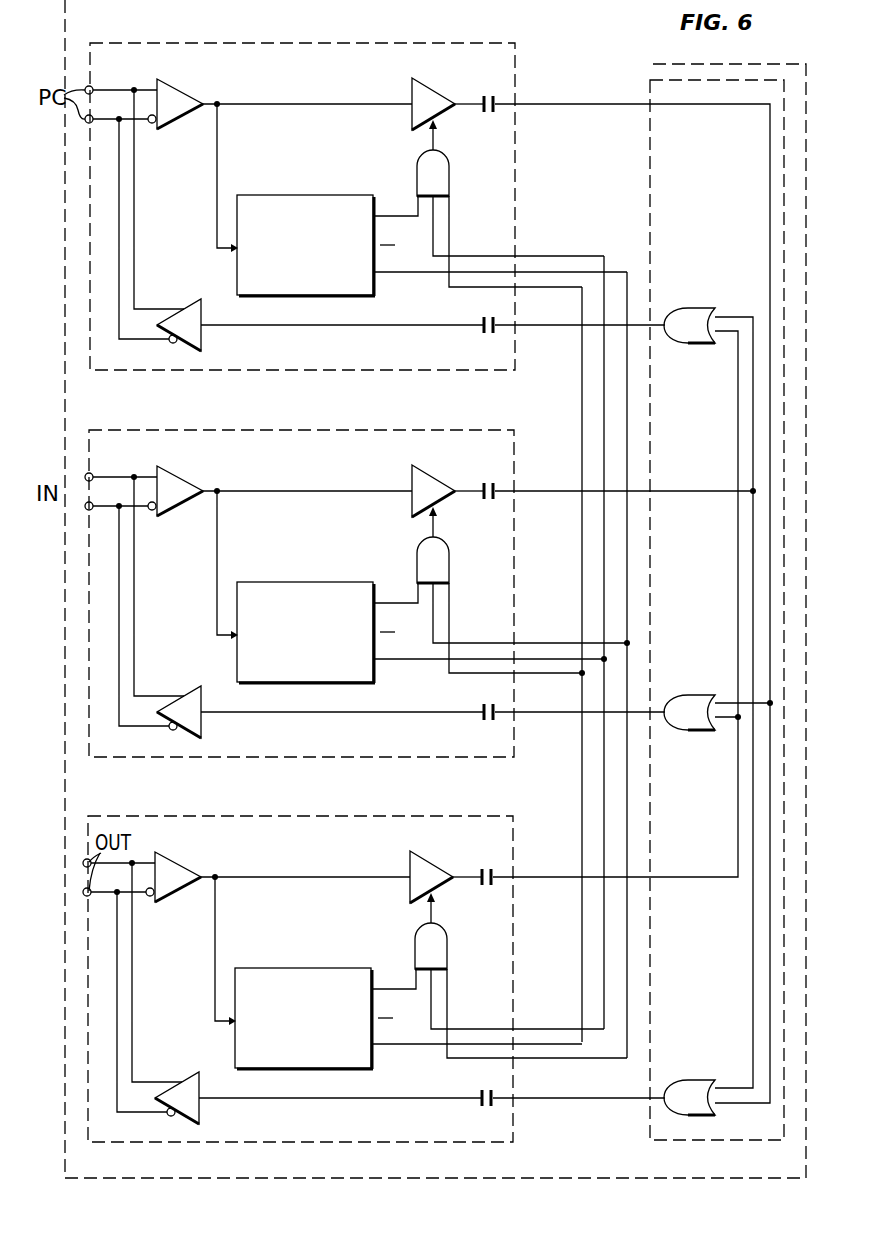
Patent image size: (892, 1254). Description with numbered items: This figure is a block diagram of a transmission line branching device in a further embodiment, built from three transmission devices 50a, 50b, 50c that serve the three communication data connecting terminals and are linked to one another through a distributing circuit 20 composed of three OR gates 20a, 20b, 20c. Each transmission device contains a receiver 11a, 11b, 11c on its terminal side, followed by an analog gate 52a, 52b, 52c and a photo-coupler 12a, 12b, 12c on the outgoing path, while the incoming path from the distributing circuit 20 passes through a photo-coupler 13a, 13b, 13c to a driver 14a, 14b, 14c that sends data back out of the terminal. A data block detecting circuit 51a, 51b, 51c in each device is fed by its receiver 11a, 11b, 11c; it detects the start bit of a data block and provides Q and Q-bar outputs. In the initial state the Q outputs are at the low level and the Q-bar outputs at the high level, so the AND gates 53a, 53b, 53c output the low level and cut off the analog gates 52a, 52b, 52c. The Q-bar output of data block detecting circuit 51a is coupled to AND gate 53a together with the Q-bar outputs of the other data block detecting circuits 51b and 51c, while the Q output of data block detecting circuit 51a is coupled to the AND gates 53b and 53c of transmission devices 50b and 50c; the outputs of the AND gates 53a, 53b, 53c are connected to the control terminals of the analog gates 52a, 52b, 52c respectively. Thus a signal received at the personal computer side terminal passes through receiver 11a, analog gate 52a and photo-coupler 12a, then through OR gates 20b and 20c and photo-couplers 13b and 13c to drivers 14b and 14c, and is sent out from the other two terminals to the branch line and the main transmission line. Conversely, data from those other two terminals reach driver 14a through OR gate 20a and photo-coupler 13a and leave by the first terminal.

The distributing circuit 20 is at (644, 88).
The OR gate 20a is at (694, 306).
The OR gate 20b is at (694, 693).
The OR gate 20c is at (694, 1078).
The transmission device 50a is at (163, 38).
The transmission device 50b is at (163, 425).
The transmission device 50c is at (163, 811).
The receiver 11a is at (183, 97).
The receiver 11b is at (183, 484).
The receiver 11c is at (181, 870).
The photo-coupler 12a is at (484, 94).
The photo-coupler 12b is at (484, 481).
The photo-coupler 12c is at (482, 867).
The photo-coupler 13a is at (483, 327).
The photo-coupler 13b is at (483, 714).
The photo-coupler 13c is at (481, 1100).
The driver 14a is at (194, 306).
The driver 14b is at (194, 693).
The driver 14c is at (192, 1079).
The data block detecting circuit 51a is at (305, 195).
The data block detecting circuit 51b is at (305, 582).
The data block detecting circuit 51c is at (303, 968).
The analog gate 52a is at (412, 96).
The analog gate 52b is at (412, 483).
The analog gate 52c is at (410, 869).
The AND gate 53a is at (452, 174).
The AND gate 53b is at (452, 561).
The AND gate 53c is at (450, 947).